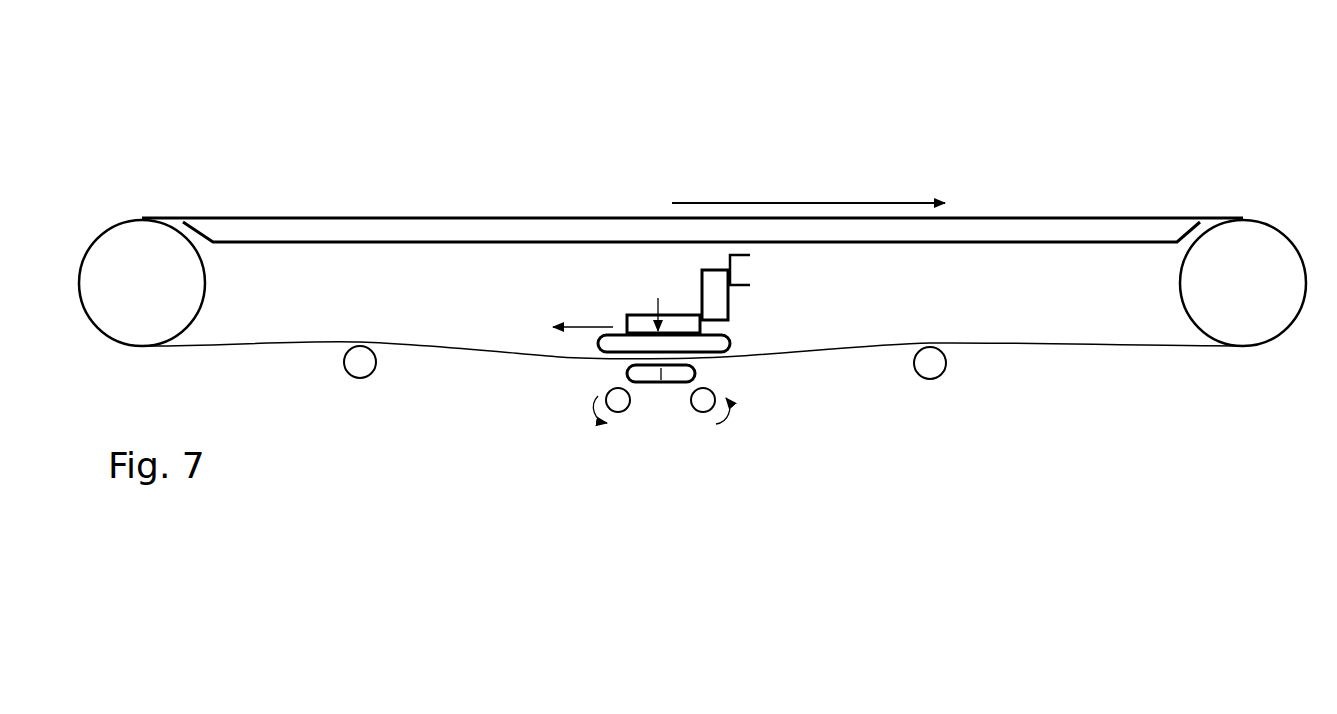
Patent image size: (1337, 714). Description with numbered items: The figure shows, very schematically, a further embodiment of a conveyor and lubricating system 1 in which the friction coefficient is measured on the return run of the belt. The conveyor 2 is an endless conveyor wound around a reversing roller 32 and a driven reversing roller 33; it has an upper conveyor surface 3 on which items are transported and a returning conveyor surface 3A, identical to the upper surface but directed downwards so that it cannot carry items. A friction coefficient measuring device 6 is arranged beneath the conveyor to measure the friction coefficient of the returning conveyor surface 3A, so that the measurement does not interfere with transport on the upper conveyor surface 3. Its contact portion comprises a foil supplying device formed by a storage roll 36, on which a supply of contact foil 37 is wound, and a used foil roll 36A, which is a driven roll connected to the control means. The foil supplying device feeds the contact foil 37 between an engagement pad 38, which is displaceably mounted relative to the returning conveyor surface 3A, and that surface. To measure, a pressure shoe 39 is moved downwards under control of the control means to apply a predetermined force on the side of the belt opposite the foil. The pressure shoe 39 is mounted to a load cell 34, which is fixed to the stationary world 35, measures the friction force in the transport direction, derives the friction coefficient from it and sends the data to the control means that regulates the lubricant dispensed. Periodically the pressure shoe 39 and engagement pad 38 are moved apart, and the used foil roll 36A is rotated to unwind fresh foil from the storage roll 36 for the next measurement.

The conveyor and lubricating system 1 is at (615, 158).
The conveyor 2 is at (1043, 283).
The upper conveyor surface 3 is at (250, 215).
The returning conveyor surface 3A is at (252, 343).
The friction coefficient measuring device 6 is at (742, 493).
The reversing roller 32 is at (118, 268).
The driven reversing roller 33 is at (1272, 267).
The load cell 34 is at (712, 298).
The stationary world 35 is at (730, 272).
The storage roll 36 is at (703, 412).
The used foil roll 36A is at (618, 412).
The contact foil 37 is at (618, 374).
The engagement pad 38 is at (660, 383).
The pressure shoe 39 is at (730, 357).